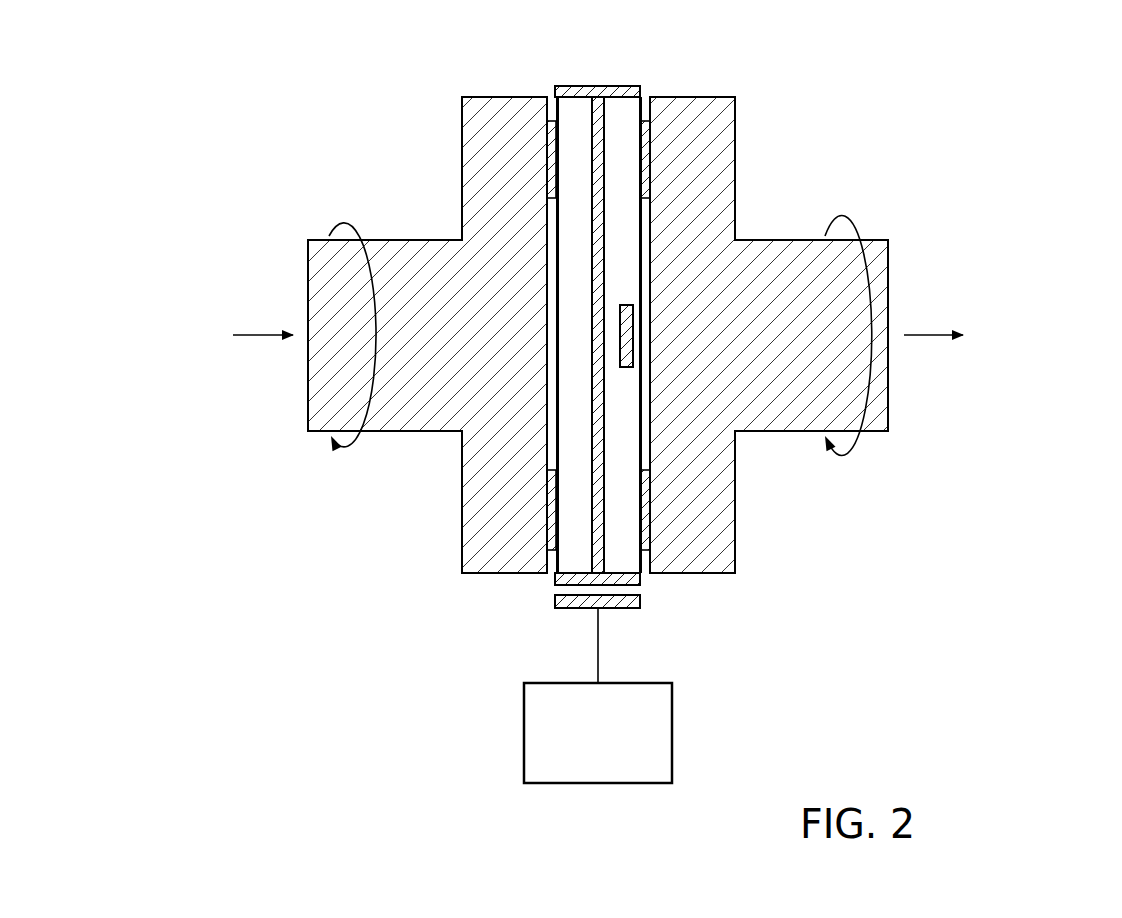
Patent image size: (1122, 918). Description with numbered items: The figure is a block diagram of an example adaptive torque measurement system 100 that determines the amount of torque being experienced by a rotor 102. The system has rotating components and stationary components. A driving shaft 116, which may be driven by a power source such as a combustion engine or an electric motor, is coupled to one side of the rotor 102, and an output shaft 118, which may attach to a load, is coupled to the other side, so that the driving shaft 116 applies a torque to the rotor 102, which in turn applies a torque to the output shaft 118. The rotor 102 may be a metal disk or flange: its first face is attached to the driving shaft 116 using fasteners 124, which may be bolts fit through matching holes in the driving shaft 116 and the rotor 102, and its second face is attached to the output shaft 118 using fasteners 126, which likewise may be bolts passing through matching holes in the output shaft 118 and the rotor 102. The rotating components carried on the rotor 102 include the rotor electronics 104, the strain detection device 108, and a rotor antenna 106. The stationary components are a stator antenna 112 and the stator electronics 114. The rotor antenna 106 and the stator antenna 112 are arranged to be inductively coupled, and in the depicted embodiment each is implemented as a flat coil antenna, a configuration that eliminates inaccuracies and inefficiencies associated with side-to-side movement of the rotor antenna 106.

The adaptive torque measurement system 100 is at (668, 407).
The rotor 102 is at (619, 104).
The rotor electronics 104 is at (695, 336).
The rotor antenna 106 is at (572, 86).
The strain detection device 108 is at (627, 332).
The stator antenna 112 is at (555, 602).
The stator electronics 114 is at (672, 723).
The driving shaft 116 is at (431, 239).
The output shaft 118 is at (766, 239).
The fasteners 124 is at (548, 157).
The fasteners 126 is at (649, 157).